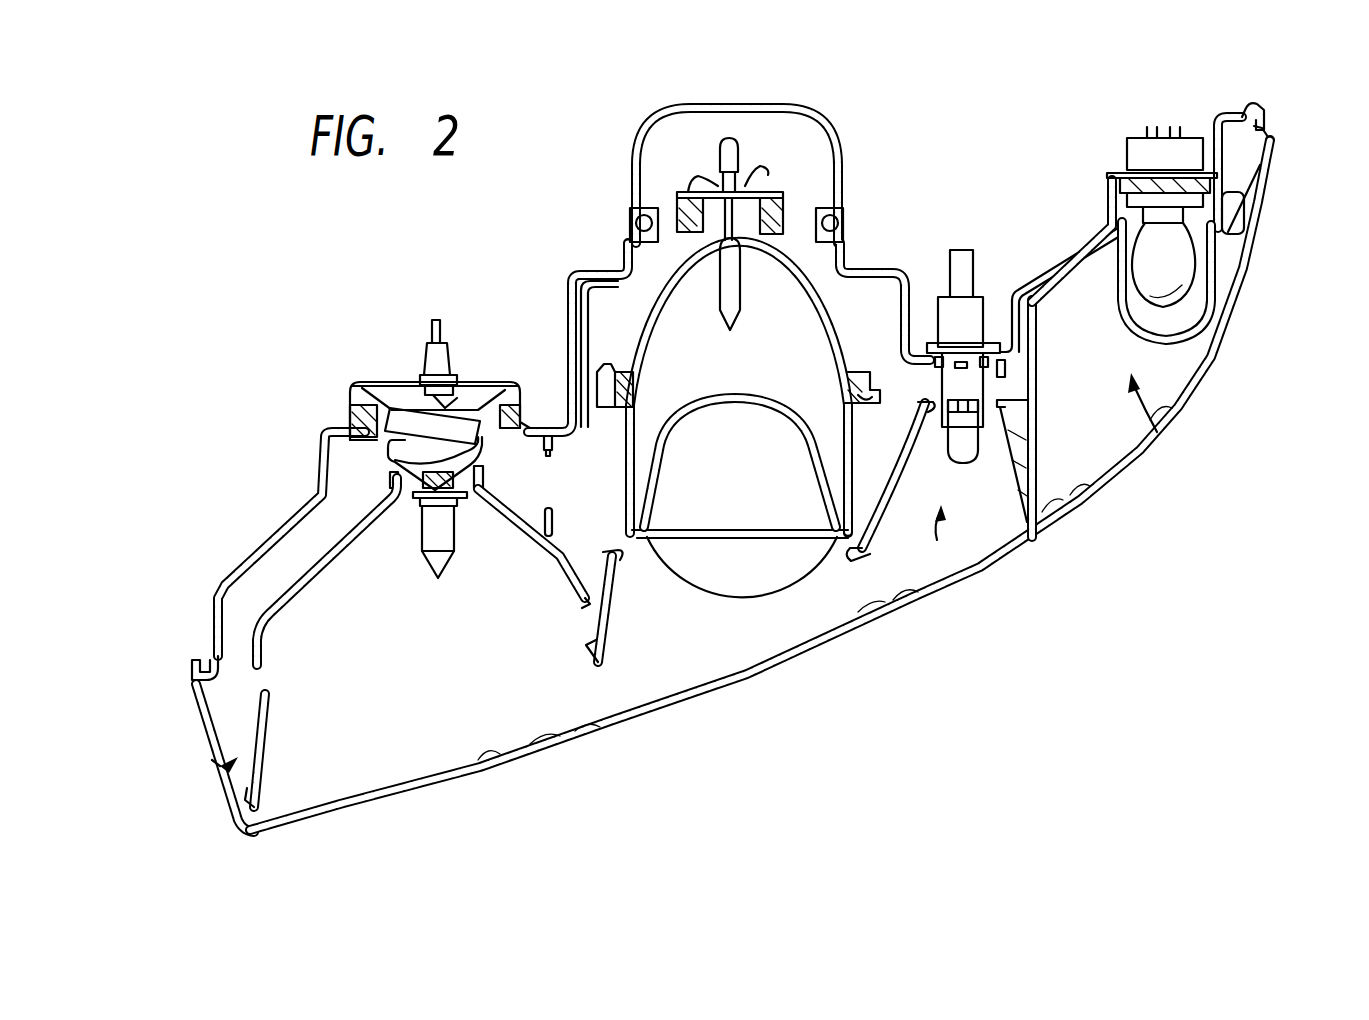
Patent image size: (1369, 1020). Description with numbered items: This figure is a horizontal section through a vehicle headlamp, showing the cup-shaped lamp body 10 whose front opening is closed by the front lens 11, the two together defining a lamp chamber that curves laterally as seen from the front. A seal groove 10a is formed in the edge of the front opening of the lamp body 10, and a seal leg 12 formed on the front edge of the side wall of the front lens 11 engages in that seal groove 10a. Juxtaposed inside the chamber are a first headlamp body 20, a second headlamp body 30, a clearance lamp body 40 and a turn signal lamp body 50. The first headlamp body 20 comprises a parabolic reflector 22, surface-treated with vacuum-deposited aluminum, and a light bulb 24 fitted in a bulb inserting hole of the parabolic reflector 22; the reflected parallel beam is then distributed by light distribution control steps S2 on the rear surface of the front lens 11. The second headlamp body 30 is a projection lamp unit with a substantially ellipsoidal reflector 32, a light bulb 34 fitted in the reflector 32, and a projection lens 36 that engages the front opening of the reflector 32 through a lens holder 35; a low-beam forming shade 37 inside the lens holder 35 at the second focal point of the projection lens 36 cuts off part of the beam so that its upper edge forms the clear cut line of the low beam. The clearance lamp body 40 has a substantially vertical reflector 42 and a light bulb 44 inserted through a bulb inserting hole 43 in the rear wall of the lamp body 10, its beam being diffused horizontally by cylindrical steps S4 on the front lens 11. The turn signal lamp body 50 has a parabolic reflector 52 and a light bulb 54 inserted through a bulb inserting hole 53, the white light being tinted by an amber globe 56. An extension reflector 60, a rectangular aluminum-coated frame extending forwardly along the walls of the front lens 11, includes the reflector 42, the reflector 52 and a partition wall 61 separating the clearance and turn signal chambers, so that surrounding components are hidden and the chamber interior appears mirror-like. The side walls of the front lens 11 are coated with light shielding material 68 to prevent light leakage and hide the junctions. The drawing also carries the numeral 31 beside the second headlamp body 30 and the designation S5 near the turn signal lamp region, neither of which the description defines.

The lamp body 10 is at (291, 518).
The seal groove 10a is at (190, 660).
The front lens 11 is at (612, 728).
The seal leg 12 is at (190, 678).
The first headlamp body 20 is at (423, 528).
The parabolic reflector 22 is at (300, 578).
The light bulb 24 is at (436, 558).
The second headlamp body 30 is at (734, 437).
The second lamp unit (alternate) 31 is at (738, 632).
The reflector 32 is at (653, 293).
The light bulb 34 is at (743, 290).
The lens holder 35 is at (637, 467).
The projection lens 36 is at (767, 573).
The low-beam forming shade 37 is at (760, 393).
The clearance lamp body 40 is at (1023, 417).
The reflector 42 is at (1035, 540).
The bulb inserting hole 43 is at (940, 307).
The light bulb 44 is at (1000, 403).
The turn signal lamp body 50 is at (1177, 294).
The parabolic reflector 52 is at (1062, 270).
The bulb inserting hole 53 is at (1147, 163).
The light bulb 54 is at (1187, 260).
The amber globe 56 is at (1213, 300).
The extension reflector 60 is at (227, 773).
The partition wall 61 is at (1033, 472).
The light shielding material 68 is at (213, 740).
The light distribution control steps S2 is at (517, 760).
The cylindrical steps S4 is at (880, 613).
The space S5 is at (1180, 407).